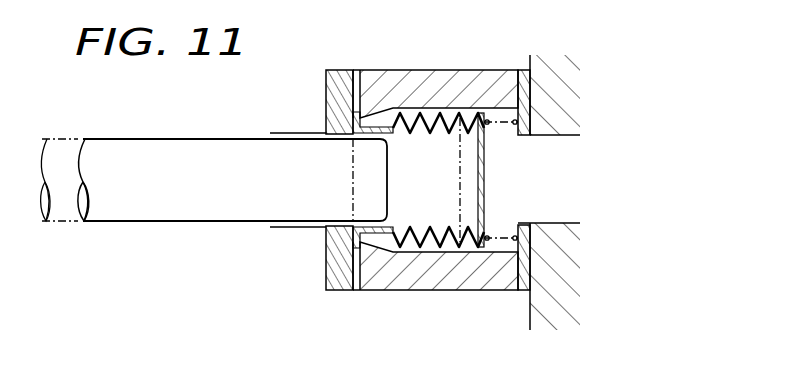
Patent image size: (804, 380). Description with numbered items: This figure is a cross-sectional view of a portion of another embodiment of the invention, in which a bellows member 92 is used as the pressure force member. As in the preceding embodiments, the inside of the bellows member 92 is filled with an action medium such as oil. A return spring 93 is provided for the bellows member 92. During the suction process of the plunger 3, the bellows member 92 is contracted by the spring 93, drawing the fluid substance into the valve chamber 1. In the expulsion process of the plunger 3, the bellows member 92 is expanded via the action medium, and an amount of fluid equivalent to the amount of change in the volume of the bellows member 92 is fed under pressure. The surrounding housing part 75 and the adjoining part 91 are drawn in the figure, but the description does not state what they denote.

The valve chamber 1 is at (601, 212).
The plunger 3 is at (222, 213).
The bearing housing block 75 is at (483, 277).
The boot flange / sleeve 91 is at (407, 213).
The bellows member 92 is at (420, 235).
The return spring 93 is at (487, 125).